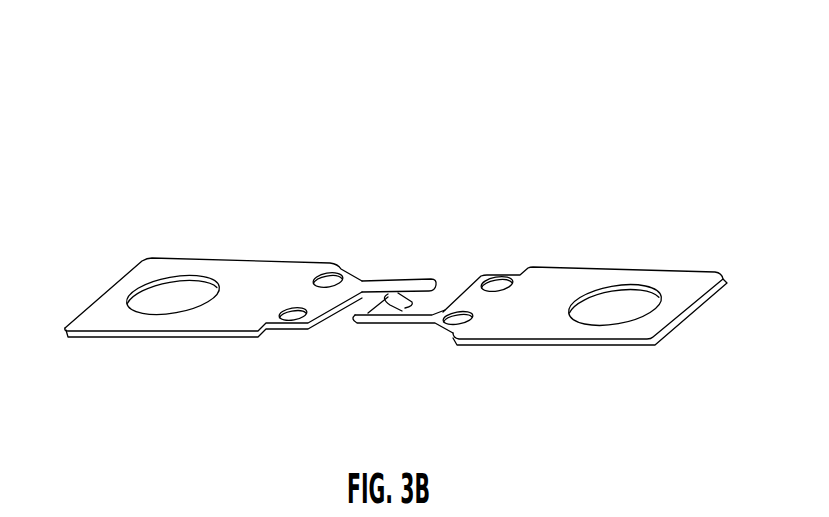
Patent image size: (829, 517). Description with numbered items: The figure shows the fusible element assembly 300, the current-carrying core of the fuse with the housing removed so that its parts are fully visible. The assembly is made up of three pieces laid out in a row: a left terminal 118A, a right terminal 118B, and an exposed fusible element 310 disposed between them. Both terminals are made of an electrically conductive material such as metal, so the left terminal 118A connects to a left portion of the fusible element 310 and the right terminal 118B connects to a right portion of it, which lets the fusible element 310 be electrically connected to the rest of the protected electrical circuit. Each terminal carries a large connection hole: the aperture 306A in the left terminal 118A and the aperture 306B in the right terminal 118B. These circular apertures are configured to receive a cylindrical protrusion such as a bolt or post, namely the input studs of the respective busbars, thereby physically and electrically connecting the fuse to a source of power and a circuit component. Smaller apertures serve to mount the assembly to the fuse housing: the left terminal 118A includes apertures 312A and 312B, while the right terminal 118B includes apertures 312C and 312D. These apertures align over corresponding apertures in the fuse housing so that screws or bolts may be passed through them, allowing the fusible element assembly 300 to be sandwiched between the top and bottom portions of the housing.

The fusible element assembly 300 is at (115, 90).
The left terminal 118A is at (230, 277).
The right terminal 118B is at (585, 278).
The aperture 306A is at (173, 298).
The aperture 306B is at (607, 305).
The fusible element 310 is at (399, 278).
The aperture 312A is at (325, 277).
The aperture 312B is at (293, 319).
The aperture 312C is at (499, 282).
The aperture 312D is at (458, 323).